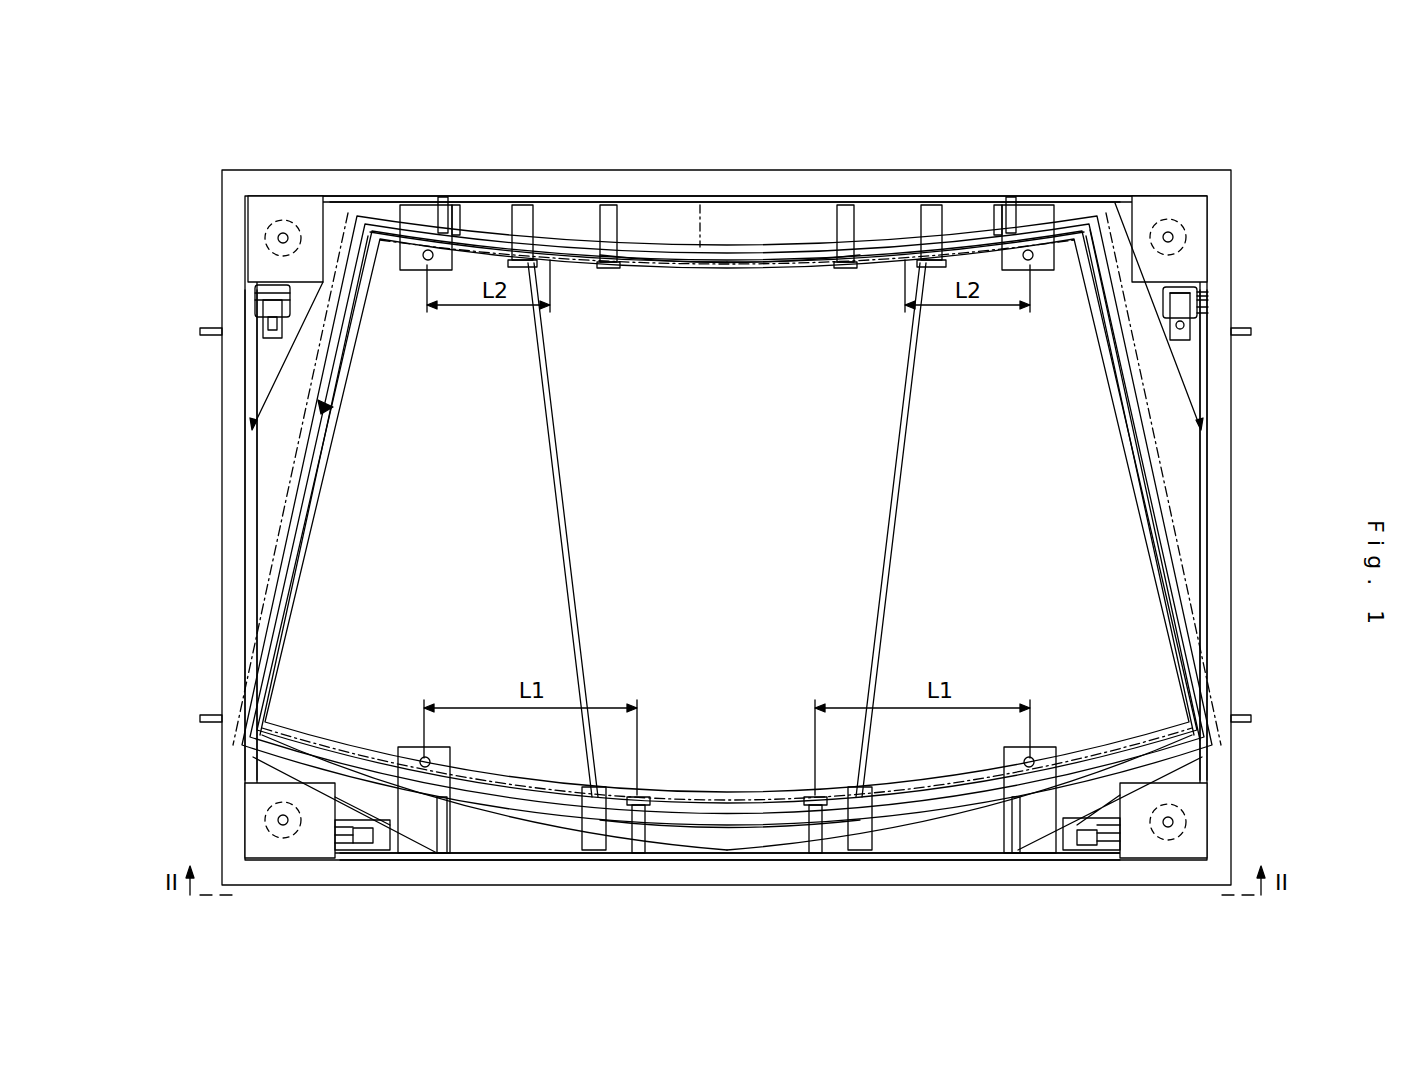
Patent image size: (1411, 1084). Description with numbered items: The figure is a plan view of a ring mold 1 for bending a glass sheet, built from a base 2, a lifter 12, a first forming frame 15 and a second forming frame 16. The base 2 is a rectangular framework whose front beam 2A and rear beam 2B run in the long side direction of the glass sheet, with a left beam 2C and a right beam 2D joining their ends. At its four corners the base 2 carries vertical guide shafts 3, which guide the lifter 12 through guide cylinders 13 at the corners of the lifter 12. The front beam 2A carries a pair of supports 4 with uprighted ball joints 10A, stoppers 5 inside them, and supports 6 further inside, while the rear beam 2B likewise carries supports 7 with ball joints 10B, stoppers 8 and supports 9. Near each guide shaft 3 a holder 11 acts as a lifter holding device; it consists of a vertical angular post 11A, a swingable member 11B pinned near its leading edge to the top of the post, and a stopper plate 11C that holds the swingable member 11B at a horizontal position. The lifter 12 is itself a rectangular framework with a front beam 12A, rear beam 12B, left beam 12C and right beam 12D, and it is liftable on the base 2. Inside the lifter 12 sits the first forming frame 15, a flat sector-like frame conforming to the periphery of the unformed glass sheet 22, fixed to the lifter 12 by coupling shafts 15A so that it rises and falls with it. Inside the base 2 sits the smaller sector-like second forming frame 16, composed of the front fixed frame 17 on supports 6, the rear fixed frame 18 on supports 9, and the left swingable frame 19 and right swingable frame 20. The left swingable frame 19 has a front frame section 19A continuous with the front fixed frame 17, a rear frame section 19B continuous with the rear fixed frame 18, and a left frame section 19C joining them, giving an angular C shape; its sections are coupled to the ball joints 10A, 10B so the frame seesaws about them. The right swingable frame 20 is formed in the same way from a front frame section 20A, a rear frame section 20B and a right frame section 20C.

The ring mold 1 is at (740, 168).
The base 2 is at (1215, 466).
The front beam 2A is at (735, 860).
The rear beam 2B is at (783, 196).
The left beam 2C is at (245, 533).
The right beam 2D is at (1207, 508).
The guide shaft 3 is at (278, 238).
The support 4 is at (420, 840).
The stopper 5 is at (592, 840).
The support 6 is at (637, 840).
The support 7 is at (440, 205).
The stopper 8 is at (521, 205).
The support 9 is at (607, 205).
The ball joint 10A is at (452, 790).
The ball joint 10B is at (408, 208).
The holder 11 is at (262, 305).
The angular post 11A is at (1200, 300).
The swingable member 11B is at (1185, 293).
The stopper plate 11C is at (1184, 328).
The lifter 12 is at (1225, 600).
The front beam 12A is at (678, 860).
The rear beam 12B is at (638, 200).
The left beam 12C is at (232, 575).
The right beam 12D is at (1230, 550).
The guide cylinder 13 is at (268, 224).
The first forming frame 15 is at (300, 450).
The coupling shaft 15A is at (457, 205).
The second forming frame 16 is at (318, 407).
The front fixed frame 17 is at (765, 828).
The rear fixed frame 18 is at (812, 250).
The left swingable frame 19 is at (290, 620).
The front frame section 19A is at (540, 805).
The rear frame section 19B is at (548, 228).
The left frame section 19C is at (318, 497).
The right swingable frame 20 is at (1125, 440).
The front frame section 20A is at (912, 812).
The rear frame section 20B is at (932, 228).
The right frame section 20C is at (1170, 640).
The unformed glass sheet 22 is at (700, 205).